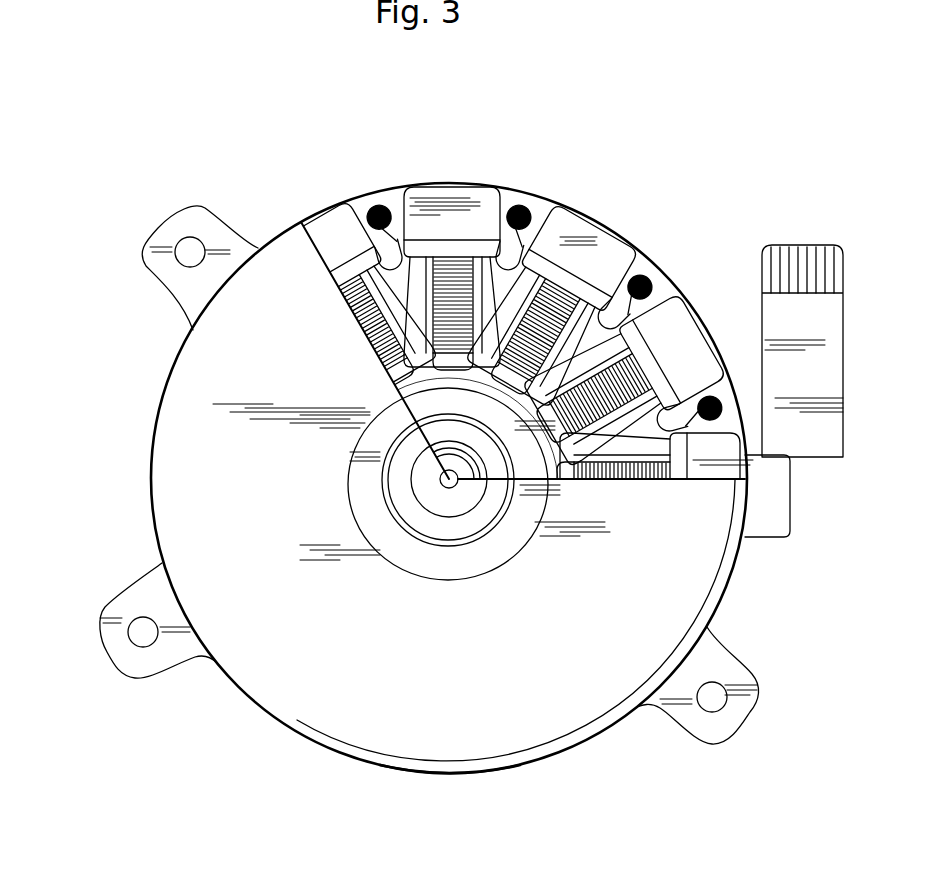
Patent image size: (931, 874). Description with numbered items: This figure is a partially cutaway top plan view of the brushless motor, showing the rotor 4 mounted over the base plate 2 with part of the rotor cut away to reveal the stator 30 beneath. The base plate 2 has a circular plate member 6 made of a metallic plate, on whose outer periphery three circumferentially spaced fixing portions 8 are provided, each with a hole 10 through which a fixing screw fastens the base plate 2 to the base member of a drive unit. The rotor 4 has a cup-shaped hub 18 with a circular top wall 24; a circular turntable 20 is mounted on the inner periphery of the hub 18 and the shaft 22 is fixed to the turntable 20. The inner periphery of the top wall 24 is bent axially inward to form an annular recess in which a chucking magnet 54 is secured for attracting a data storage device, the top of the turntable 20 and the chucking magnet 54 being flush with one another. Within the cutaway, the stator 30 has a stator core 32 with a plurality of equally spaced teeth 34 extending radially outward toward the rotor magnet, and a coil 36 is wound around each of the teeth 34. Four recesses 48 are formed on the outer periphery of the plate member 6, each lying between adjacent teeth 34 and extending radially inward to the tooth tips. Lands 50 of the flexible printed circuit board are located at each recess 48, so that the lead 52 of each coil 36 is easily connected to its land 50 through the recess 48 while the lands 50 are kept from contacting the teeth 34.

The base plate 2 is at (707, 223).
The rotor 4 is at (278, 737).
The circular plate member 6 is at (502, 358).
The fixing portion 8 is at (713, 657).
The hole 10 is at (712, 698).
The cup-shaped hub 18 is at (447, 777).
The circular turntable 20 is at (465, 527).
The shaft 22 is at (418, 478).
The circular top wall 24 is at (570, 750).
The stator 30 is at (485, 393).
The stator core 32 is at (557, 470).
The teeth 34 is at (497, 379).
The coil 36 is at (489, 384).
The recess 48 is at (502, 358).
The land 50 is at (544, 315).
The lead 52 is at (627, 243).
The chucking magnet 54 is at (403, 548).